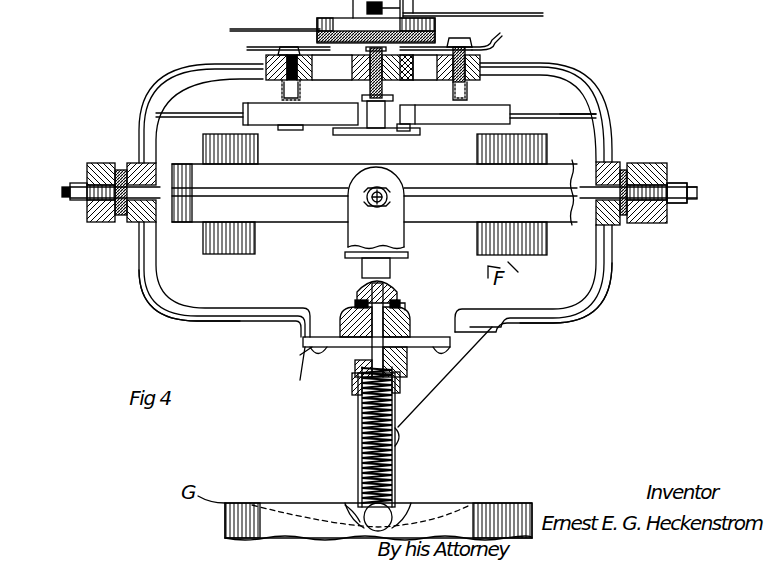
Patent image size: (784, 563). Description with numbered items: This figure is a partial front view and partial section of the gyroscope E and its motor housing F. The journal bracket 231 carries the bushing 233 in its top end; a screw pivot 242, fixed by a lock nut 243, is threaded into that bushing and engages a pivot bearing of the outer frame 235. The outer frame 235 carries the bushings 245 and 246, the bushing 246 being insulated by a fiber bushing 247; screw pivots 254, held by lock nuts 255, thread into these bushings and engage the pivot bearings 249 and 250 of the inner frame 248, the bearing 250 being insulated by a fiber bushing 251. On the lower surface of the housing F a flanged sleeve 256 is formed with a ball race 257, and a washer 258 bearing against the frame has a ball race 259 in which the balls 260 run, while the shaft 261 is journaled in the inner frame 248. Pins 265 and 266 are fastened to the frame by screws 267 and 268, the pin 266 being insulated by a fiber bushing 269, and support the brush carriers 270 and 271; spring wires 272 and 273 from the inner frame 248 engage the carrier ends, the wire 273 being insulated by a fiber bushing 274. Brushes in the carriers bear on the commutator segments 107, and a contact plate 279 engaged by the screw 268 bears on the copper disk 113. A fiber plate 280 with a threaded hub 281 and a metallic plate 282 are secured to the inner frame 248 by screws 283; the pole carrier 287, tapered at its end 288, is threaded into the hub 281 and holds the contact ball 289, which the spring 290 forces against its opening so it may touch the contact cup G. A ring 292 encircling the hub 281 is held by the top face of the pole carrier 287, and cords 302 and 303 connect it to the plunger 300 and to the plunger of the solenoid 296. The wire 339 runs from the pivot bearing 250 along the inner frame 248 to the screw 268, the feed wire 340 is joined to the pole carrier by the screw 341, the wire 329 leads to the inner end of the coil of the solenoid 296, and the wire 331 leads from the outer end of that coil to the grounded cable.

The commutator segments 107 is at (378, 128).
The copper disk 113 is at (368, 53).
The journal bracket 231 is at (376, 212).
The bushing 233 is at (376, 21).
The outer frame 235 is at (374, 194).
The screw pivots 242 is at (415, 8).
The lock nuts 243 is at (362, 204).
The bushing 245 is at (95, 210).
The bushing 246 is at (632, 170).
The fiber bushing 247 is at (676, 183).
The inner frame 248 is at (152, 298).
The pivot bearing 249 is at (135, 222).
The pivot bearing 250 is at (622, 170).
The fiber bushing 251 is at (596, 220).
The screw pivots 254 is at (72, 182).
The lock nuts 255 is at (80, 182).
The flanged sleeve 256 is at (362, 271).
The ball race 257 is at (357, 298).
The washer 258 is at (345, 326).
The ball race 259 is at (404, 307).
The balls 260 is at (390, 295).
The shaft 261 is at (410, 324).
The pin 265 is at (282, 92).
The pin 266 is at (468, 92).
The screw 267 is at (275, 45).
The screw 268 is at (482, 37).
The fiber bushing 269 is at (450, 84).
The brush carrier 270 is at (300, 116).
The brush carrier 271 is at (453, 116).
The spring wire 272 is at (168, 118).
The spring wire 273 is at (553, 116).
The fiber bushing 274 is at (512, 115).
The contact plate 279 is at (447, 48).
The fiber plate 280 is at (305, 350).
The threaded hub 281 is at (400, 360).
The metallic plate 282 is at (303, 340).
The screws 283 is at (310, 360).
The pole carrier 287 is at (358, 440).
The tapered end 288 is at (403, 512).
The contact ball 289 is at (356, 512).
The spring 290 is at (396, 408).
The ring 292 is at (318, 352).
The solenoid 296 is at (320, 40).
The plunger 300 is at (478, 505).
The cord 302 is at (418, 376).
The cord 303 is at (352, 382).
The wire 329 is at (484, 10).
The wire 331 is at (262, 20).
The wire 339 is at (590, 82).
The feed wire 340 is at (590, 315).
The screw 341 is at (403, 436).